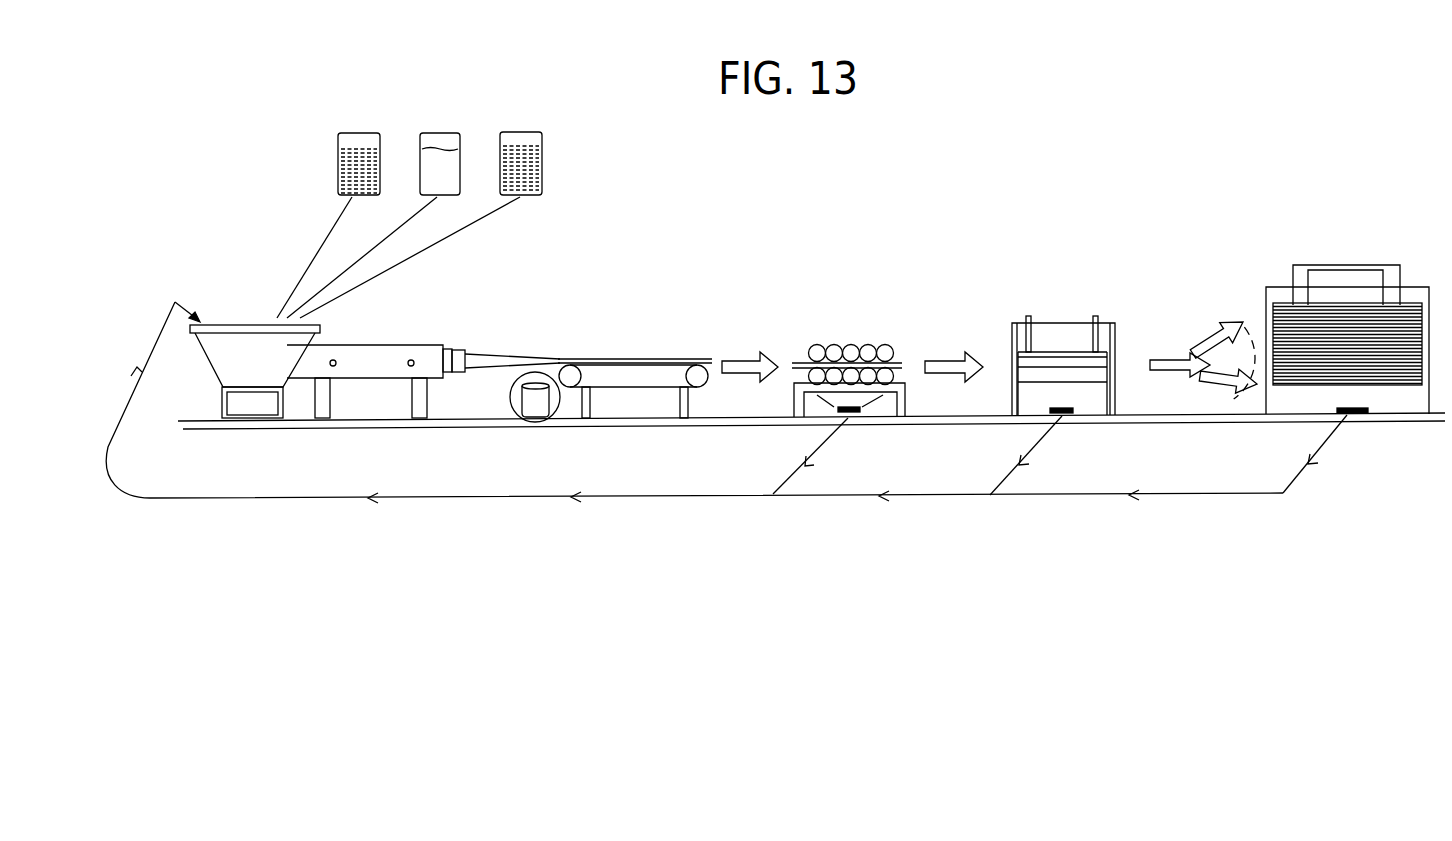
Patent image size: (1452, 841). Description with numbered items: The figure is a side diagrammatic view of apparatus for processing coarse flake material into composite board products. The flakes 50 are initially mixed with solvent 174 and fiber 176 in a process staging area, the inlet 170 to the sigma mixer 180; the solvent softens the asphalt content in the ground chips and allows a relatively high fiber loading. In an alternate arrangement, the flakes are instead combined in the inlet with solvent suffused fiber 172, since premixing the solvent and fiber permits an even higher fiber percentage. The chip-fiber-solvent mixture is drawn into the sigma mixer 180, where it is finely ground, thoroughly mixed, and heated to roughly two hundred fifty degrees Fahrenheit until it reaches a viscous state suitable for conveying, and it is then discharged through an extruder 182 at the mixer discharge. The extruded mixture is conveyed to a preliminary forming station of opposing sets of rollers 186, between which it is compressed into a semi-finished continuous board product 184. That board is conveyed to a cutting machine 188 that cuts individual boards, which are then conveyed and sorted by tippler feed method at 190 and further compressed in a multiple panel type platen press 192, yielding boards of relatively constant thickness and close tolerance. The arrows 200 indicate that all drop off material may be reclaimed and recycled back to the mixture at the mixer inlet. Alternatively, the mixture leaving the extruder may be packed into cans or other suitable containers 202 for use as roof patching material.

The flakes 50 is at (225, 317).
The inlet 170 is at (258, 325).
The solvent suffused fiber 172 is at (532, 132).
The solvent 174 is at (450, 133).
The fiber 176 is at (368, 133).
The sigma mixer 180 is at (368, 345).
The extruder 182 is at (456, 350).
The semi-finished continuous board product 184 is at (903, 362).
The rollers 186 is at (824, 345).
The cutting machine 188 is at (1048, 323).
The tippler feed 190 is at (1190, 355).
The multiple panel type platen press 192 is at (1283, 287).
The arrows 200 is at (646, 496).
The cans or other suitable containers 202 is at (516, 420).